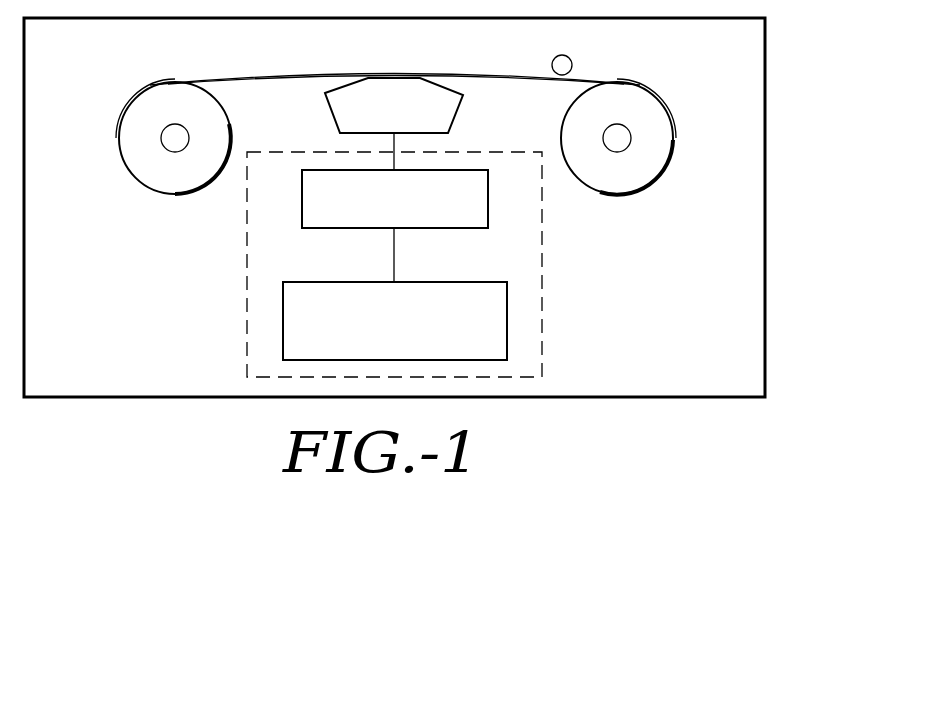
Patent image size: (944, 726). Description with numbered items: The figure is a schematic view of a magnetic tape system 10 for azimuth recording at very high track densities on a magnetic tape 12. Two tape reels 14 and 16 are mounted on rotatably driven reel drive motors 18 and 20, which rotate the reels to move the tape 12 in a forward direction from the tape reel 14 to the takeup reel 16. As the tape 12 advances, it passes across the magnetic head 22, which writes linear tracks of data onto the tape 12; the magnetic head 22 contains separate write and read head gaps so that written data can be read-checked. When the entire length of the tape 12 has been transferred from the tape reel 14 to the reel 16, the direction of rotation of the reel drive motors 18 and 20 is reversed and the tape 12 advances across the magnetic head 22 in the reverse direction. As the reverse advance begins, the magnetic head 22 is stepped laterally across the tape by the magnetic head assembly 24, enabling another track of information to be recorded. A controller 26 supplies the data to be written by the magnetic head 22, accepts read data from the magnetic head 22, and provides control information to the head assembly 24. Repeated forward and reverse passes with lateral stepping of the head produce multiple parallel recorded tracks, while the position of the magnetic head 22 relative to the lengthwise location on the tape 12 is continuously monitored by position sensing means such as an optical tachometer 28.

The magnetic tape system 10 is at (792, 336).
The magnetic tape 12 is at (458, 72).
The tape reel 14 is at (120, 146).
The takeup reel 16 is at (673, 160).
The reel drive motor 18 is at (164, 147).
The reel drive motor 20 is at (625, 148).
The magnetic head 22 is at (463, 118).
The magnetic head assembly 24 is at (489, 205).
The controller 26 is at (507, 326).
The optical tachometer 28 is at (571, 58).